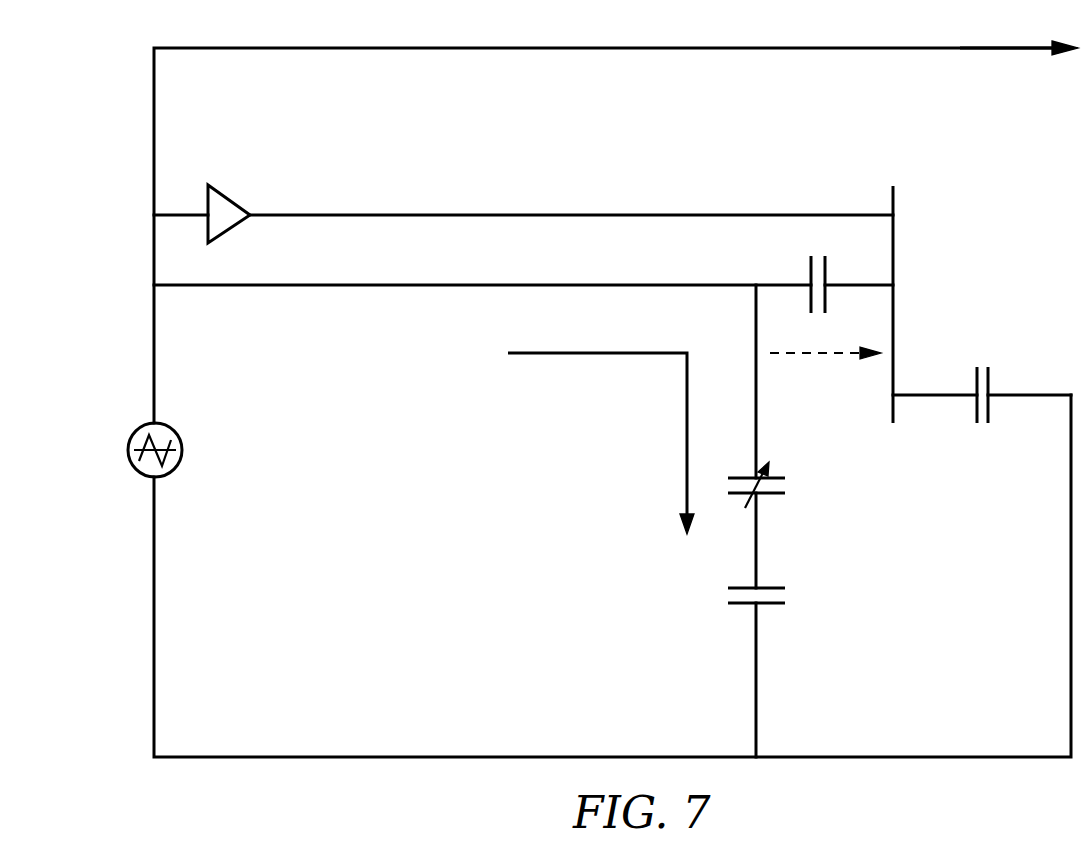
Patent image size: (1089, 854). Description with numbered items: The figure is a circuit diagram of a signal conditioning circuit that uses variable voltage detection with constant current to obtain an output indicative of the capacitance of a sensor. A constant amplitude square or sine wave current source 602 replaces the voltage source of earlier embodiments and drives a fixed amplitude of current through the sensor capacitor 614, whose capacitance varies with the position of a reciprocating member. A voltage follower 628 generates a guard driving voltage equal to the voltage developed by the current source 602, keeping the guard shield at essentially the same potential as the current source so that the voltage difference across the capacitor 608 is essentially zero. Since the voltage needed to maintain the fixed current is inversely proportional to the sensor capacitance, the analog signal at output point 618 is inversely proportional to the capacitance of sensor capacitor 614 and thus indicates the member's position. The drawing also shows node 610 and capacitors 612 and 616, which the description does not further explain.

The current source 602 is at (141, 428).
The capacitor 608 is at (808, 272).
The node 610 is at (896, 240).
The capacitor 612 is at (991, 378).
The sensor capacitor 614 is at (772, 497).
The capacitor 616 is at (772, 606).
The output point 618 is at (965, 47).
The voltage follower 628 is at (236, 199).